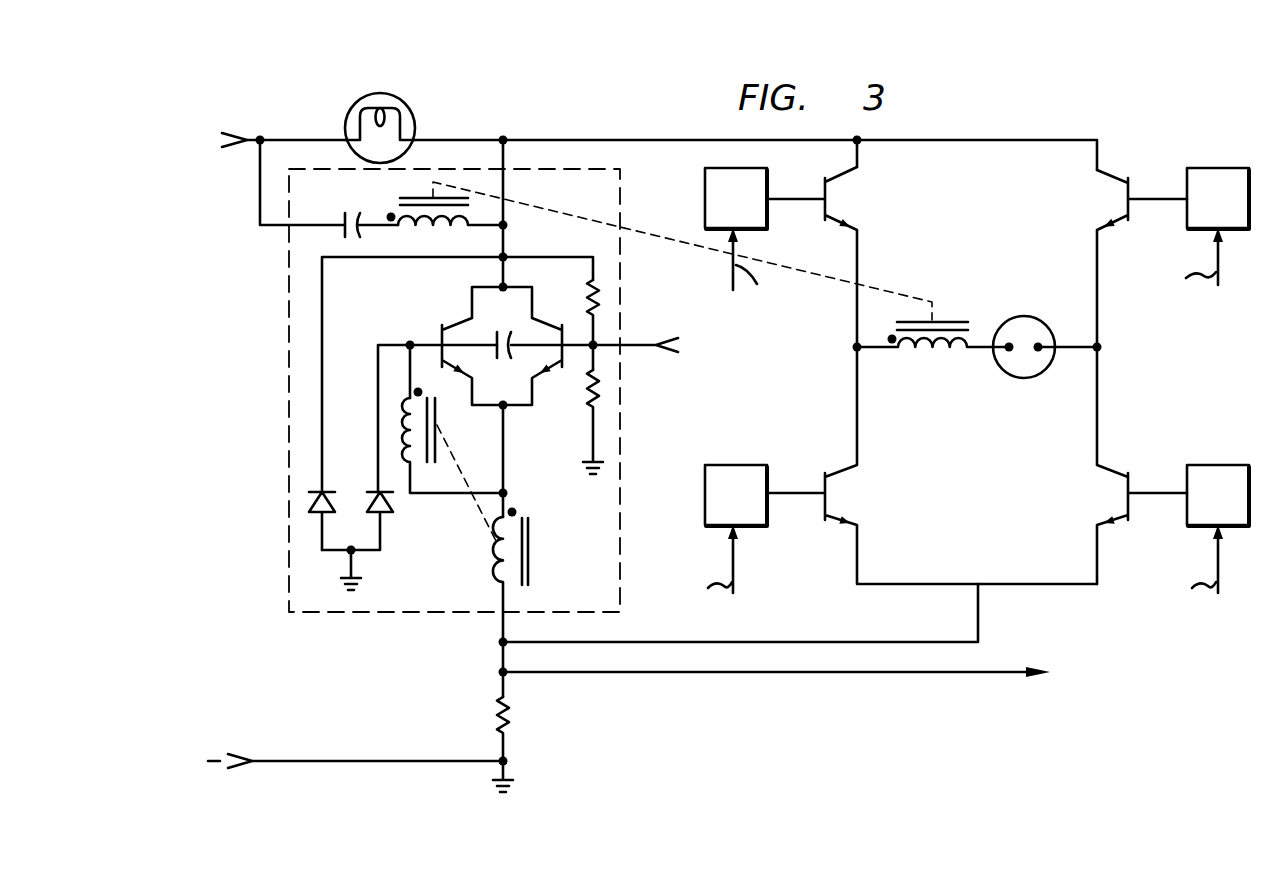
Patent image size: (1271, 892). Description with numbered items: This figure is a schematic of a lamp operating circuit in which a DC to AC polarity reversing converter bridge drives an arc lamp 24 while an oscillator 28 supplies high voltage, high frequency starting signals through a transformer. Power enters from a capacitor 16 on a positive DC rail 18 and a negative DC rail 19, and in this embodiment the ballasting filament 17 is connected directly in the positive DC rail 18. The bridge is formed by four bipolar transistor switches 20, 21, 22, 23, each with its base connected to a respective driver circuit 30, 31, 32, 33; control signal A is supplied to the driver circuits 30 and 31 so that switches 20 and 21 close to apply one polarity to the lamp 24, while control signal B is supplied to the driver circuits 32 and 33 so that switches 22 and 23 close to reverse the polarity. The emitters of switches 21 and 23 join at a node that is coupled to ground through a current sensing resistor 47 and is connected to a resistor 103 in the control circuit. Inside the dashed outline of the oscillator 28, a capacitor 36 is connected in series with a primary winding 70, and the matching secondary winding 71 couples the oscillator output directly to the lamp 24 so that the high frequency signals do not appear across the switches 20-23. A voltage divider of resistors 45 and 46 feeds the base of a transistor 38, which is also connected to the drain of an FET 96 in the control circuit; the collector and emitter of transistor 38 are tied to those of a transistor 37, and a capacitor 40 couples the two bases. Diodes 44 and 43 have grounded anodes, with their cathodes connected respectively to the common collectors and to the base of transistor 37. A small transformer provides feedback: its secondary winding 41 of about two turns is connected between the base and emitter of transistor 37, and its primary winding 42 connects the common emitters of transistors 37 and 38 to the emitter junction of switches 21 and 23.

The capacitor 16 is at (170, 450).
The filament 17 is at (348, 106).
The positive DC rail 18 is at (472, 136).
The negative DC rail 19 is at (366, 758).
The switch 20 is at (842, 186).
The switch 21 is at (1120, 494).
The switch 22 is at (1120, 190).
The switch 23 is at (842, 500).
The arc lamp 24 is at (1012, 318).
The oscillator 28 is at (622, 445).
The driver circuit 30 is at (722, 208).
The driver circuit 31 is at (1204, 505).
The driver circuit 32 is at (1204, 208).
The driver circuit 33 is at (722, 505).
The capacitor 36 is at (342, 218).
The transistor 37 is at (445, 320).
The transistor 38 is at (540, 320).
The capacitor 40 is at (493, 358).
The secondary winding 41 is at (438, 426).
The primary winding 42 is at (498, 565).
The diode 43 is at (386, 516).
The diode 44 is at (330, 476).
The resistor 45 is at (606, 310).
The resistor 46 is at (586, 394).
The current sensing resistor 47 is at (510, 720).
The primary winding 70 is at (414, 232).
The secondary winding 71 is at (930, 360).
The FET 96 is at (735, 348).
The resistor 103 is at (829, 672).